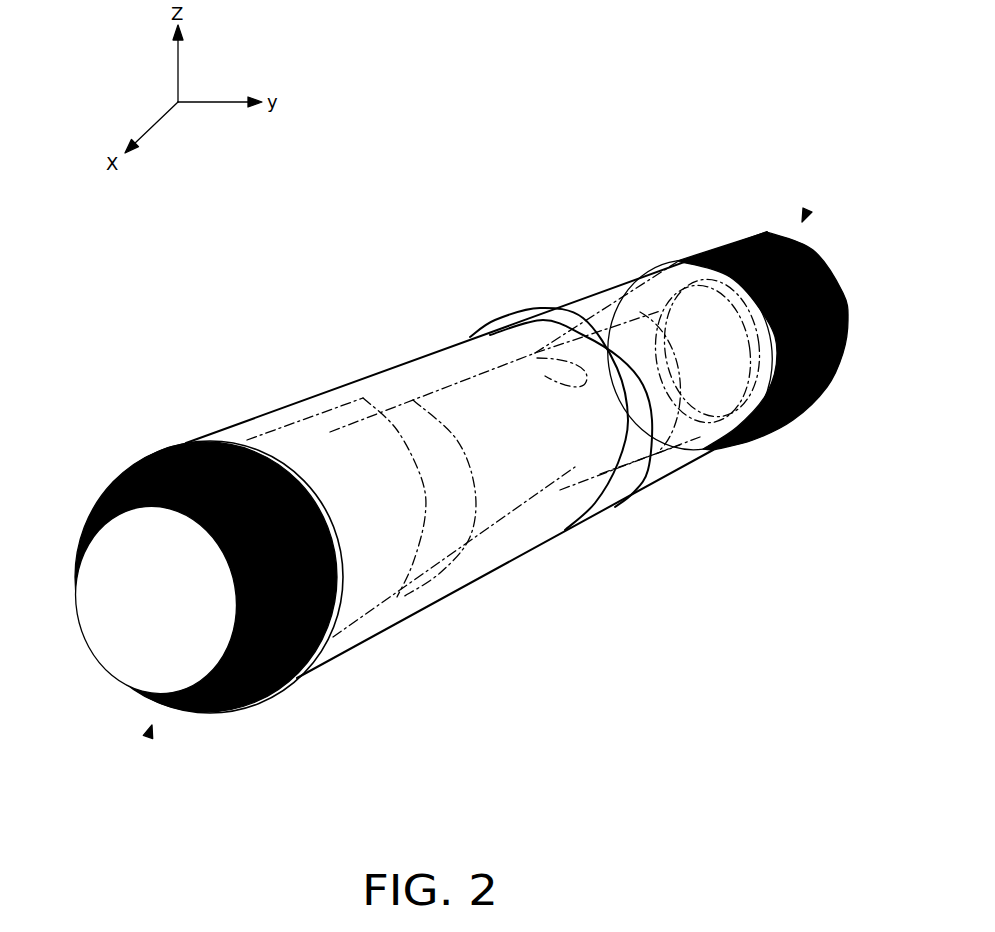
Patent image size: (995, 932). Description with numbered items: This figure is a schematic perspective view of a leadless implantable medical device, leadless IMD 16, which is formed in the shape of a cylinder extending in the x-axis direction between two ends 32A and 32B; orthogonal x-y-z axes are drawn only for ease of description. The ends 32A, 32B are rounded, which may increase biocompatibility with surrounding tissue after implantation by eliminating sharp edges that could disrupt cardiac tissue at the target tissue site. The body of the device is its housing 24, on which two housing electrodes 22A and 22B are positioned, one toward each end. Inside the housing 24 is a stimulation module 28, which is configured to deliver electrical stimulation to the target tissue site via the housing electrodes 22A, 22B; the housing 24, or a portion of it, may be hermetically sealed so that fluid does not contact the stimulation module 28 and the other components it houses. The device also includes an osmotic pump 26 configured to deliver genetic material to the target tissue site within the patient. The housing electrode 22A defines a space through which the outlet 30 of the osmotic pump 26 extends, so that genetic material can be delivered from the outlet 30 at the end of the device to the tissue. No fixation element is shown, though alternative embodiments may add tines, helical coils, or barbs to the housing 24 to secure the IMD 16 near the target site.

The leadless IMD 16 is at (582, 213).
The housing electrode 22A is at (270, 667).
The housing electrode 22B is at (825, 303).
The housing 24 is at (538, 308).
The osmotic pump 26 is at (273, 430).
The stimulation module 28 is at (673, 420).
The outlet 30 is at (117, 620).
The end 32A is at (152, 725).
The end 32B is at (802, 222).